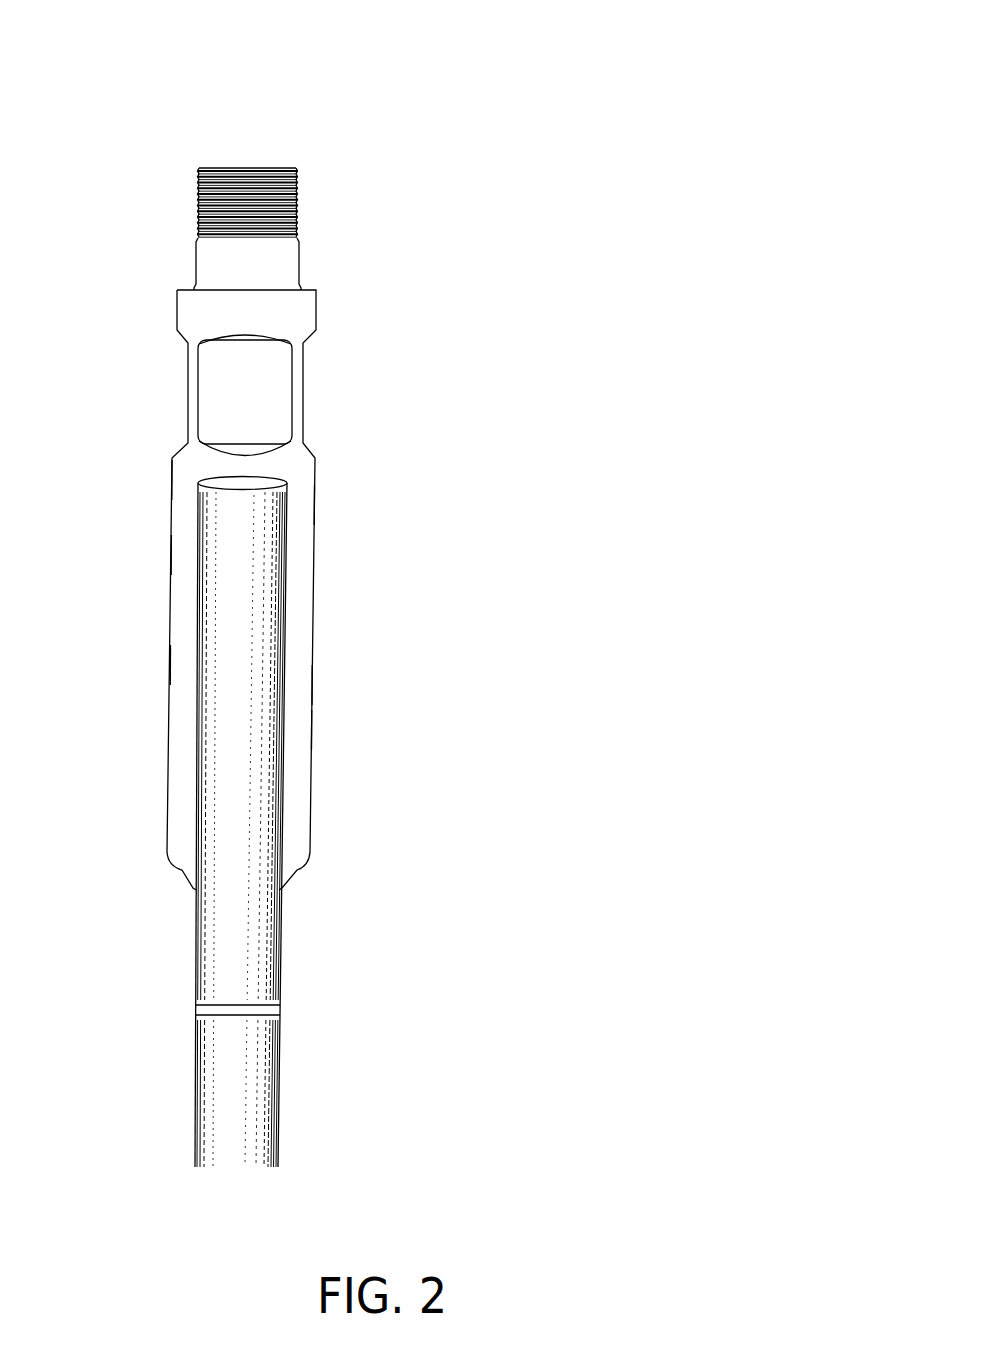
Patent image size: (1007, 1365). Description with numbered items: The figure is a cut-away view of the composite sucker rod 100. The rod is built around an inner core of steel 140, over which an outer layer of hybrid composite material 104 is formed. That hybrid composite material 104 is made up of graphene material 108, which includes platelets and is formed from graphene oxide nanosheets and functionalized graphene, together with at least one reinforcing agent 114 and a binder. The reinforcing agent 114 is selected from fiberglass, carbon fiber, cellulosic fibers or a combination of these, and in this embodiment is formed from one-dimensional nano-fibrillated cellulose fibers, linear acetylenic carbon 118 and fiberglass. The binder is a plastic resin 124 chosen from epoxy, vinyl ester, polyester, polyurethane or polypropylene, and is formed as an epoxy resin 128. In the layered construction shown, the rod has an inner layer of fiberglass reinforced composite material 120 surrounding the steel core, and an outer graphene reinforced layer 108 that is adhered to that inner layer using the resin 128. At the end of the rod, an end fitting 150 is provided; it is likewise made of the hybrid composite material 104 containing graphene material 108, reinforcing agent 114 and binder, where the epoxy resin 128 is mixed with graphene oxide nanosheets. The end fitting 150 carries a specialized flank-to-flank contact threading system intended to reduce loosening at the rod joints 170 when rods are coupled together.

The composite sucker rod 100 is at (549, 91).
The hybrid composite material 104 is at (330, 330).
The graphene material 108 is at (328, 506).
The reinforcing agent 114 is at (325, 728).
The linear acetylenic carbon 118 is at (156, 558).
The fiberglass reinforced composite material 120 is at (158, 486).
The plastic resin 124 is at (326, 686).
The epoxy resin 128 is at (155, 666).
The inner core of steel 140 is at (181, 926).
The end fitting 150 is at (314, 258).
The rod joints 170 is at (182, 236).